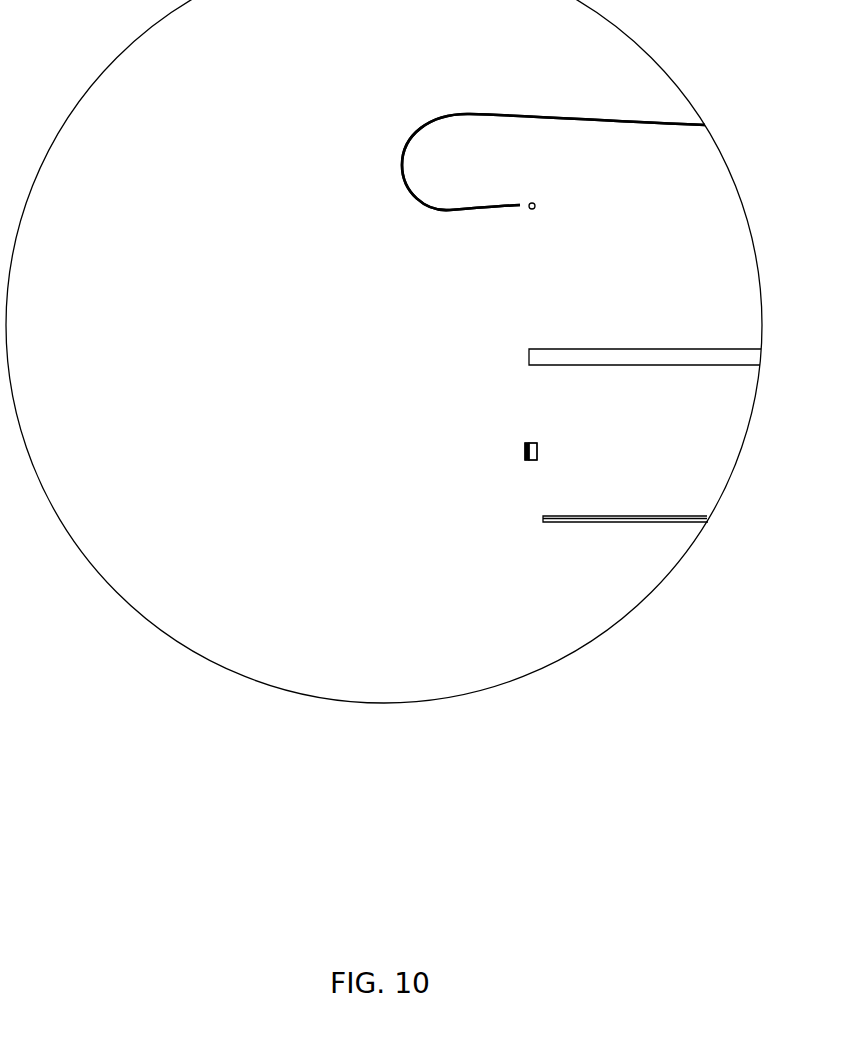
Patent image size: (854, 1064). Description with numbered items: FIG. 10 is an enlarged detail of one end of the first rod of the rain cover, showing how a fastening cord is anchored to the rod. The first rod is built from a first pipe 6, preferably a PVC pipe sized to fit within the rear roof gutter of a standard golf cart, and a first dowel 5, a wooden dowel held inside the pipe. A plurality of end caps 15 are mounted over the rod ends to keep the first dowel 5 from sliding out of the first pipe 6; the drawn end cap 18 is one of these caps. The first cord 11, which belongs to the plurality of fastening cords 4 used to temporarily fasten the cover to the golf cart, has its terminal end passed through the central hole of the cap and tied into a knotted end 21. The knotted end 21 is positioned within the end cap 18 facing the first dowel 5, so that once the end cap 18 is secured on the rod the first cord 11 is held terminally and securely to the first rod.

The plurality of fastening cords 4 is at (402, 177).
The first cord 11 is at (553, 162).
The knotted end 21 is at (532, 220).
The first pipe 6 is at (542, 361).
The plurality of end caps 15 is at (529, 460).
The end cap 18 is at (531, 451).
The first dowel 5 is at (543, 518).